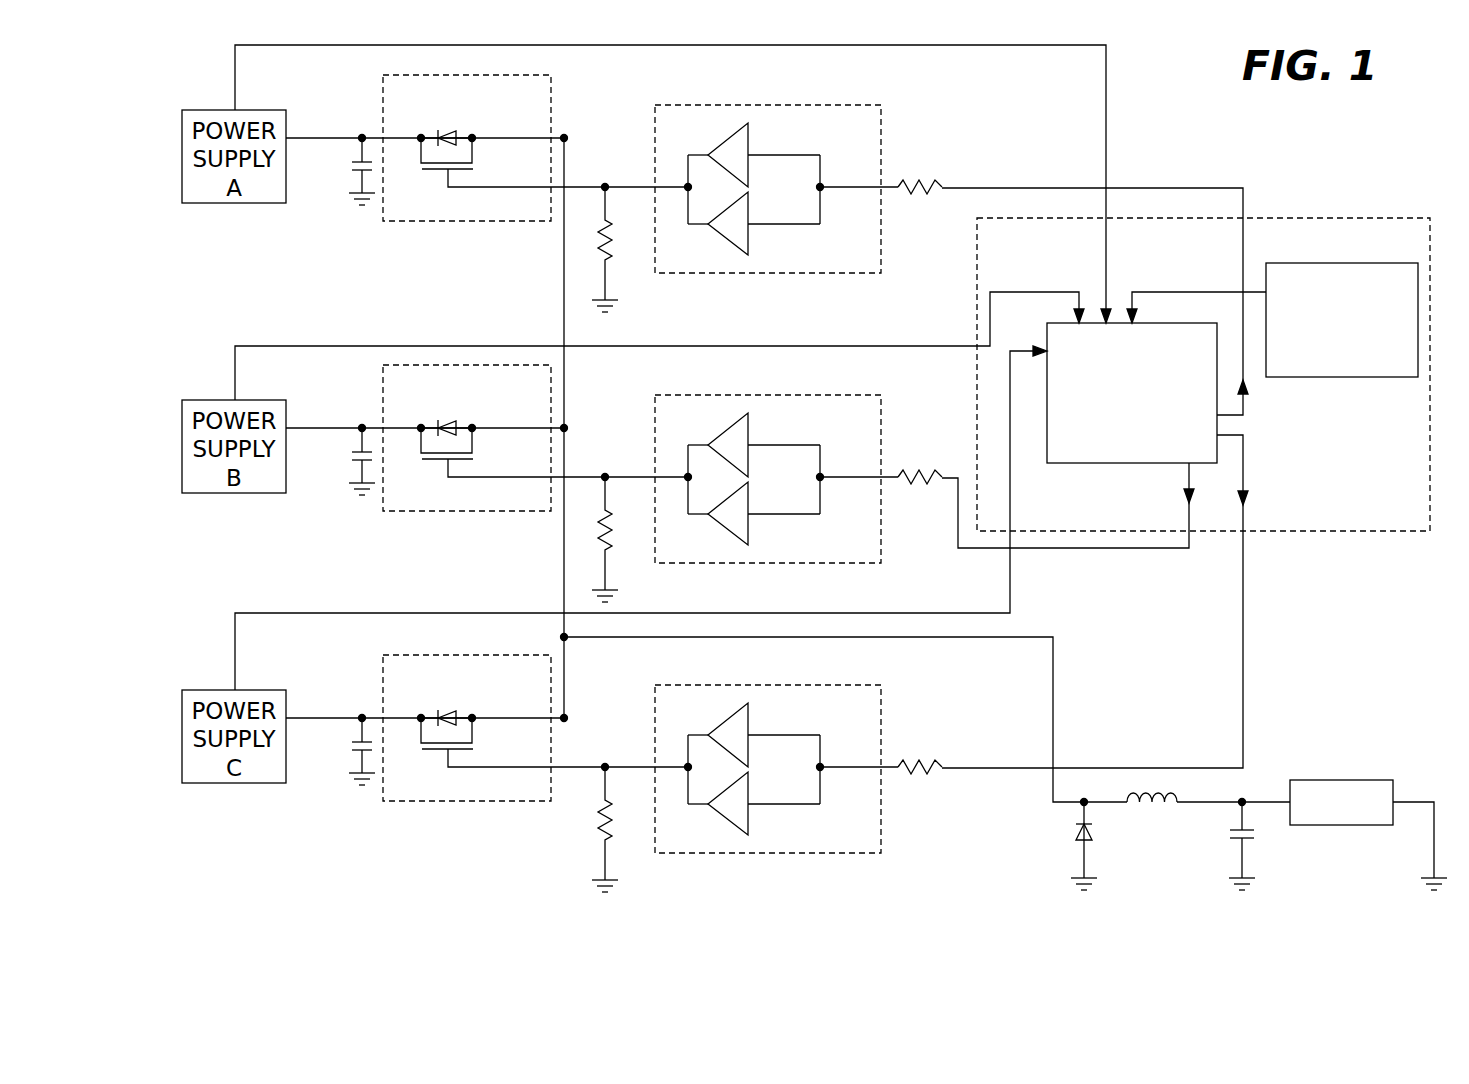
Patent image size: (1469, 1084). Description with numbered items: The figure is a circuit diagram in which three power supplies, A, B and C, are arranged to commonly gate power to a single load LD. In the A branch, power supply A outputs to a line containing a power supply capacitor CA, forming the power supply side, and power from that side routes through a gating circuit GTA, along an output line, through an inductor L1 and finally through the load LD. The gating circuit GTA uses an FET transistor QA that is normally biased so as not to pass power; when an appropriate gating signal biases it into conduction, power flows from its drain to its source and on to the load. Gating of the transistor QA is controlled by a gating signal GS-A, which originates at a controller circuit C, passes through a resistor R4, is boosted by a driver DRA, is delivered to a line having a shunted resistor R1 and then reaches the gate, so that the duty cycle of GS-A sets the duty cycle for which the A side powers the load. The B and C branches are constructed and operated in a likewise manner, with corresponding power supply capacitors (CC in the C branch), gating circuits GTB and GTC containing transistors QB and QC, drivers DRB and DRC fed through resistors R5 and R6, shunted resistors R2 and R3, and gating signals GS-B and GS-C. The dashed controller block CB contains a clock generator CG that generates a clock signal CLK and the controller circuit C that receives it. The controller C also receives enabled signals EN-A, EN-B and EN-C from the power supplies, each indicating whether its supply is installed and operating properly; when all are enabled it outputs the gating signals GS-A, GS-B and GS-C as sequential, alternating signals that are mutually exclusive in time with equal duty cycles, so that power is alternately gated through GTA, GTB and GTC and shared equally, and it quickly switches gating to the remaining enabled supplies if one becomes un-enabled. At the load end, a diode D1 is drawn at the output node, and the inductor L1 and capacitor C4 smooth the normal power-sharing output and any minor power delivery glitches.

The power supply capacitor CA is at (356, 160).
The controller block CB is at (1350, 218).
The capacitor C CC is at (340, 751).
The FET transistor QA is at (460, 127).
The transistor B QB is at (545, 430).
The transistor C QC is at (545, 720).
The gating circuit GTA is at (551, 103).
The gating circuit GTB is at (499, 435).
The gating circuit GTC is at (499, 725).
The driver DRA is at (694, 104).
The driver B DRB is at (767, 460).
The driver C DRC is at (767, 750).
The shunted resistor R1 is at (593, 249).
The resistor R2 is at (593, 539).
The resistor R3 is at (593, 829).
The resistor R4 is at (923, 184).
The resistor R5 is at (934, 462).
The resistor R6 is at (934, 752).
The enabled signal EN-A is at (1106, 124).
The enabled signal EN-B is at (1000, 290).
The enabled signal EN-C is at (1010, 508).
The gating signal GS-A is at (1150, 187).
The gating signal GS-B is at (1130, 550).
The gating signal GS-C is at (1243, 640).
The clock signal CLK is at (1142, 290).
The controller circuit C is at (1217, 455).
The clock generator CG is at (1355, 378).
The load LD is at (1358, 778).
The diode D1 is at (1071, 846).
The inductor L1 is at (1163, 820).
The capacitor C4 is at (1229, 846).